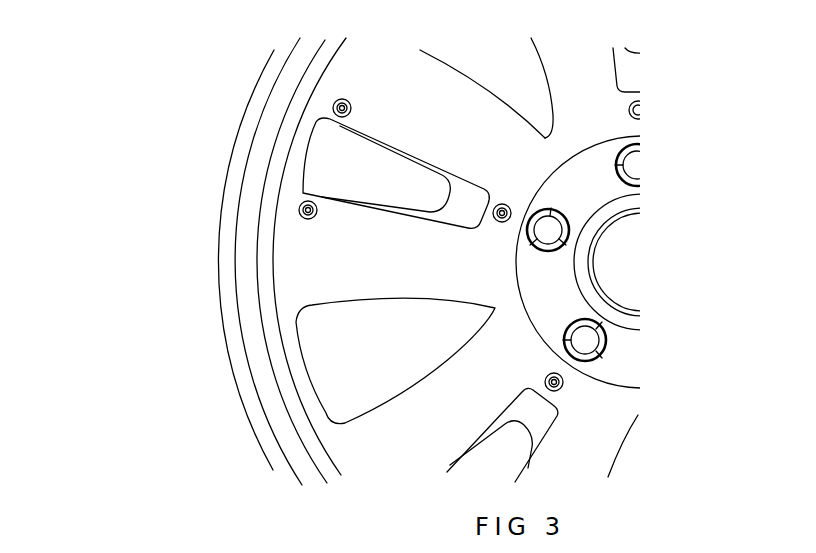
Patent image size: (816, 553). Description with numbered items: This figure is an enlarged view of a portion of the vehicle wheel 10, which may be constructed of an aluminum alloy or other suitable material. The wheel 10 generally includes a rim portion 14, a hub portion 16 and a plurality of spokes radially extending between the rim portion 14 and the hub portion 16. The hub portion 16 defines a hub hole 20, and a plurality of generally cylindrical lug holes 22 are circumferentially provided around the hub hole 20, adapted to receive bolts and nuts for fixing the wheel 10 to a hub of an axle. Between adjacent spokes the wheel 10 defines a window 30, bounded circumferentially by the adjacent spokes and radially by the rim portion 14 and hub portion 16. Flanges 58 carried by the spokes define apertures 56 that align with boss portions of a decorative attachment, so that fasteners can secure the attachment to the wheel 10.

The vehicle wheel 10 is at (133, 163).
The rim portion 14 is at (275, 438).
The hub portion 16 is at (532, 295).
The hub hole 20 is at (627, 237).
The lug holes 22 is at (590, 333).
The window 30 is at (405, 154).
The apertures 56 is at (338, 106).
The flanges 58 is at (299, 212).